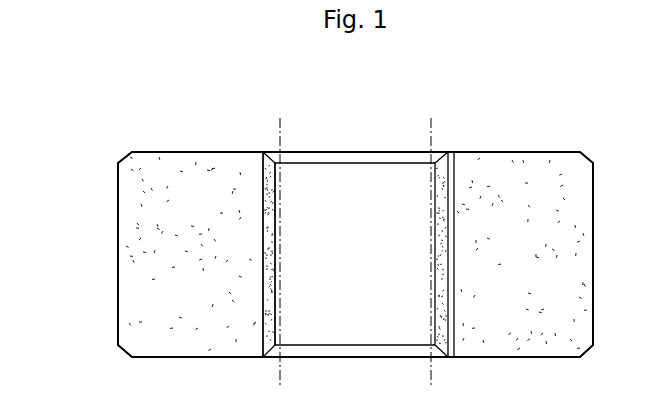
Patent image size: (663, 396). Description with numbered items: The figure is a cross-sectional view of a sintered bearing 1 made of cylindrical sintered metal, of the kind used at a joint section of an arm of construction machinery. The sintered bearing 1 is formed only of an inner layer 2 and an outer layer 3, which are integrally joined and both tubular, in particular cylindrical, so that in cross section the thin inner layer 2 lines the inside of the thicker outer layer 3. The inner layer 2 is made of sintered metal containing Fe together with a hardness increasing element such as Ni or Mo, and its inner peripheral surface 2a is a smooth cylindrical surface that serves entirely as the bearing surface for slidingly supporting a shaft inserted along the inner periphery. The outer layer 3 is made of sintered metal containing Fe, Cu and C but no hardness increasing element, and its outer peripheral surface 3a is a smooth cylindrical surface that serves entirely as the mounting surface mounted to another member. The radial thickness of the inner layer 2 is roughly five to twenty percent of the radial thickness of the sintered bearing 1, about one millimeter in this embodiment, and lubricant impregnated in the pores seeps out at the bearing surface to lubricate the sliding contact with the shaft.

The sintered bearing 1 is at (554, 130).
The inner layer 2 is at (268, 178).
The inner peripheral surface of the inner layer 2a is at (279, 197).
The outer layer 3 is at (190, 173).
The outer peripheral surface of the outer layer 3a is at (118, 243).